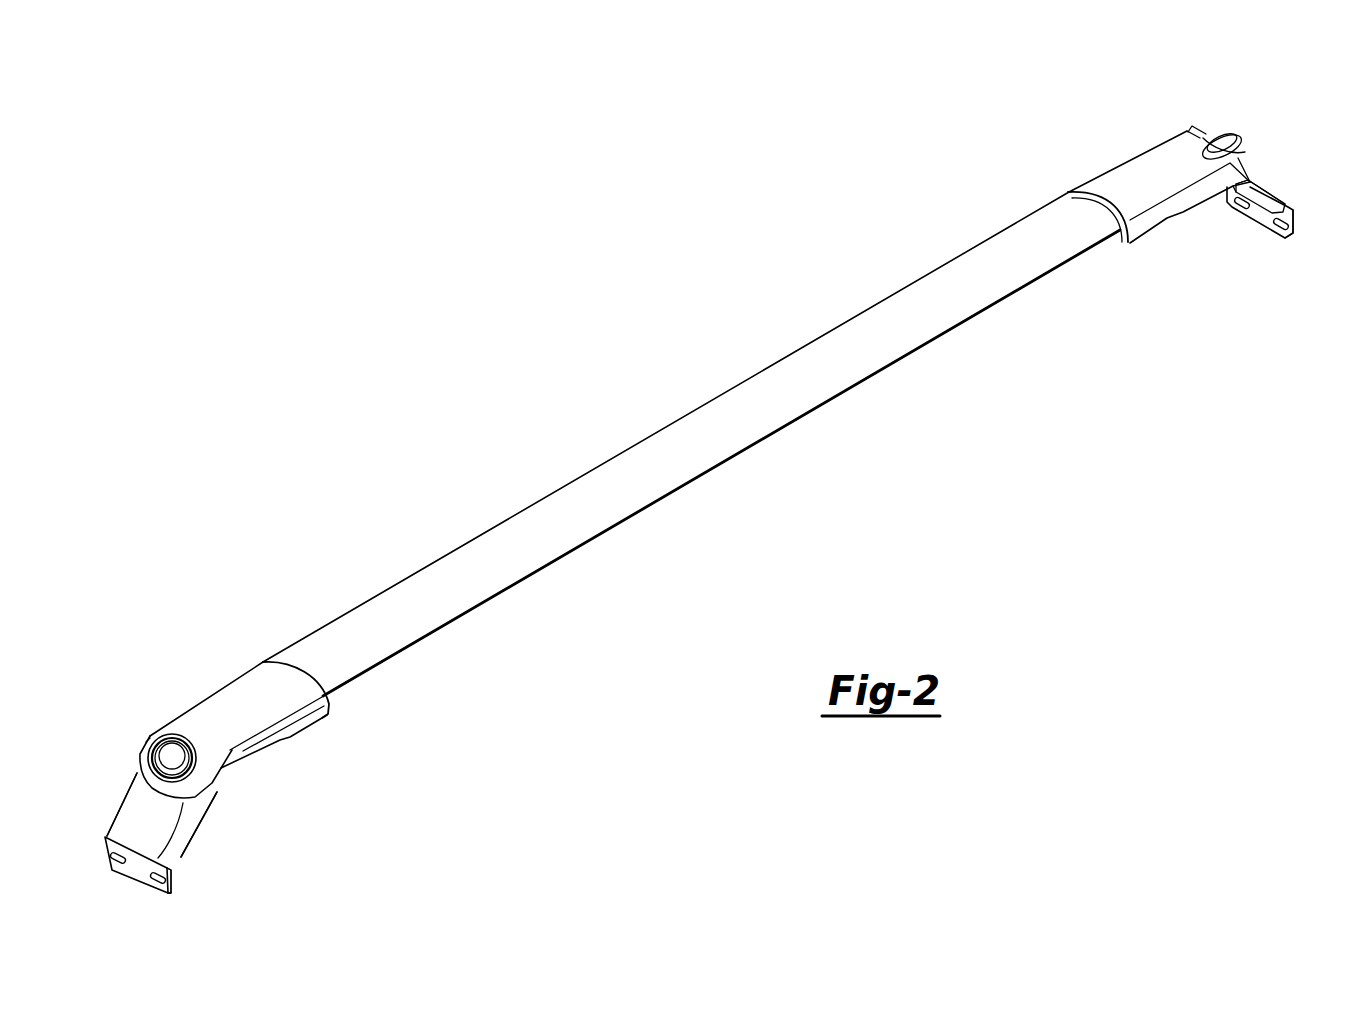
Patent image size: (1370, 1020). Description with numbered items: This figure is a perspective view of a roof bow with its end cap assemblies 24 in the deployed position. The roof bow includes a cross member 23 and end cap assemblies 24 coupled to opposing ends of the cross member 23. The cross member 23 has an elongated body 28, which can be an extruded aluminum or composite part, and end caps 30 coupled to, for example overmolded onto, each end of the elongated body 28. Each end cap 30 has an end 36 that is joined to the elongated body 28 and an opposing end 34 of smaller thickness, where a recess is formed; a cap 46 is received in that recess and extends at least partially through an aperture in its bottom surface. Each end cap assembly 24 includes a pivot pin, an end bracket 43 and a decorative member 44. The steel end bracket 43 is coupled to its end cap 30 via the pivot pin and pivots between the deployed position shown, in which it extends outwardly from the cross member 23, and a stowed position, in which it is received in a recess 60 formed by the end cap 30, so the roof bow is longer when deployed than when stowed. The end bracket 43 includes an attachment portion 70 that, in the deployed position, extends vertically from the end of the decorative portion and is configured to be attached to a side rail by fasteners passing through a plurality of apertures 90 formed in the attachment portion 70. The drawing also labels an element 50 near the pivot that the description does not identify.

The cross member 23 is at (740, 382).
The elongated body 28 is at (800, 362).
The end cap 30 is at (240, 695).
The end of end cap 36 is at (255, 661).
The end of end cap 34 is at (148, 740).
The cap 46 is at (163, 748).
The pivot pin 50 is at (178, 750).
The recess 60 is at (257, 762).
The end cap assembly 24 is at (196, 849).
The decorative member 44 is at (137, 807).
The attachment portion 70 is at (130, 882).
The apertures 90 is at (108, 838).
The end bracket 43 is at (172, 882).